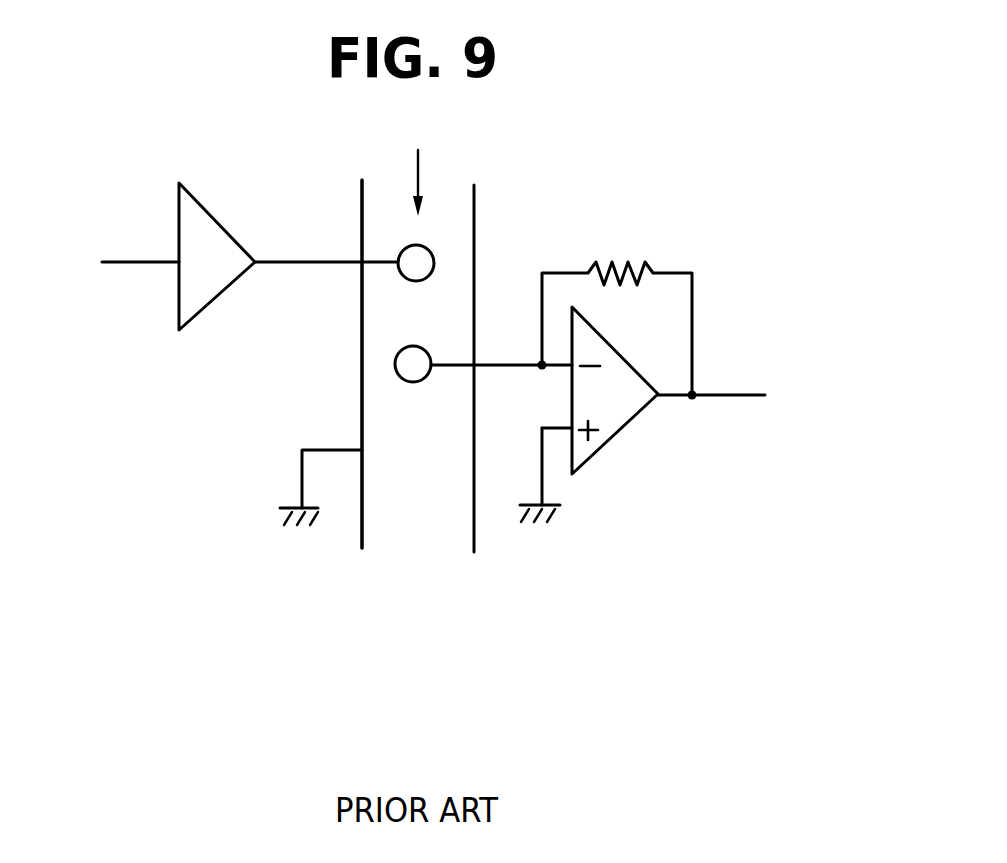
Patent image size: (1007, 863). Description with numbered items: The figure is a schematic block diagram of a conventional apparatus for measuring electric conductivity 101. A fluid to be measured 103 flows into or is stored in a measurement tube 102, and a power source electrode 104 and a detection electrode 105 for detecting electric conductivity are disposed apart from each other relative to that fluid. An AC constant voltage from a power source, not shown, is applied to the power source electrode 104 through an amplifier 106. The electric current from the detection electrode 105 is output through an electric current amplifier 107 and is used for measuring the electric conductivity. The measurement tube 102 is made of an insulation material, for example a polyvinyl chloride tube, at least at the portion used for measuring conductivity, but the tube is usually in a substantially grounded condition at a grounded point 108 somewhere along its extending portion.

The apparatus for measuring electric conductivity 101 is at (373, 339).
The measurement tube 102 is at (362, 232).
The fluid to be measured 103 is at (420, 190).
The power source electrode 104 is at (434, 255).
The detection electrode 105 is at (401, 349).
The amplifier 106 is at (220, 223).
The electric current amplifier 107 is at (668, 258).
The grounded point 108 is at (285, 480).